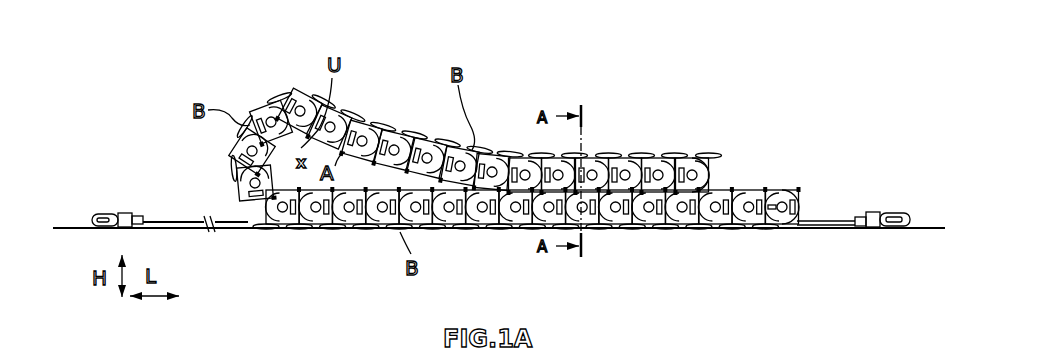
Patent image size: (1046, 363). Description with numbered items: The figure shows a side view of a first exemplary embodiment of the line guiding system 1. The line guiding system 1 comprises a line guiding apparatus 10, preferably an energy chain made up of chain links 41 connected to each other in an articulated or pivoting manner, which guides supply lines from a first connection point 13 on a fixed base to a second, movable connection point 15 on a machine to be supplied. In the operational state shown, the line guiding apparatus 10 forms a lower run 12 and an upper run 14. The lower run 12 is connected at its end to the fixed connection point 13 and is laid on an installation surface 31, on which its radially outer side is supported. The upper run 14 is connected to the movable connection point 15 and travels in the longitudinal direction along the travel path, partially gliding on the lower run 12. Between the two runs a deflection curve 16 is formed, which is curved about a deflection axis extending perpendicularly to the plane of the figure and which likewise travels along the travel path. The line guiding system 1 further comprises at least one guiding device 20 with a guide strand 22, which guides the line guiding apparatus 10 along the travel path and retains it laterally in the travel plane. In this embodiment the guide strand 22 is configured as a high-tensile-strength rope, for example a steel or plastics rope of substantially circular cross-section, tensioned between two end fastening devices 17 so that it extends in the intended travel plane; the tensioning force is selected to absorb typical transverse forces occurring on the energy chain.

The line guiding system 1 is at (105, 68).
The line guiding apparatus 10 is at (501, 158).
The lower run 12 is at (727, 190).
The first connection point 13 is at (540, 212).
The upper run 14 is at (516, 144).
The second connection point 15 is at (697, 143).
The deflection curve 16 is at (235, 165).
The fastening device 17 is at (877, 212).
The guiding device 20 is at (160, 218).
The guide strand 22 is at (826, 222).
The installation surface 31 is at (72, 227).
The chain link 41 is at (687, 225).